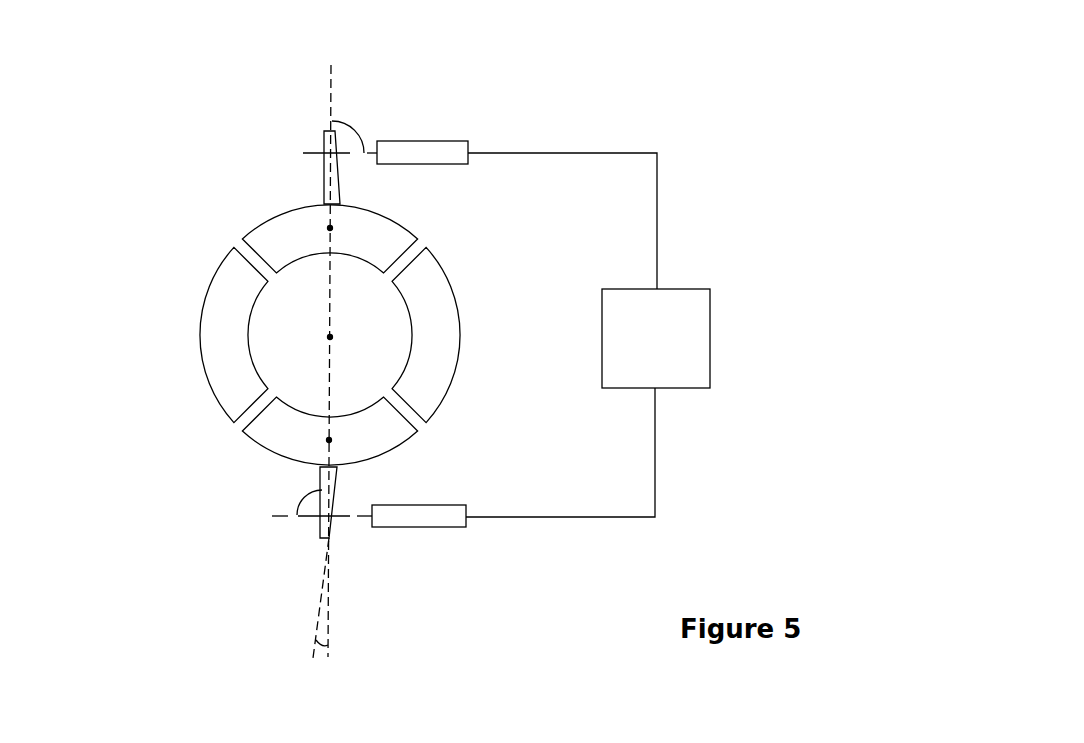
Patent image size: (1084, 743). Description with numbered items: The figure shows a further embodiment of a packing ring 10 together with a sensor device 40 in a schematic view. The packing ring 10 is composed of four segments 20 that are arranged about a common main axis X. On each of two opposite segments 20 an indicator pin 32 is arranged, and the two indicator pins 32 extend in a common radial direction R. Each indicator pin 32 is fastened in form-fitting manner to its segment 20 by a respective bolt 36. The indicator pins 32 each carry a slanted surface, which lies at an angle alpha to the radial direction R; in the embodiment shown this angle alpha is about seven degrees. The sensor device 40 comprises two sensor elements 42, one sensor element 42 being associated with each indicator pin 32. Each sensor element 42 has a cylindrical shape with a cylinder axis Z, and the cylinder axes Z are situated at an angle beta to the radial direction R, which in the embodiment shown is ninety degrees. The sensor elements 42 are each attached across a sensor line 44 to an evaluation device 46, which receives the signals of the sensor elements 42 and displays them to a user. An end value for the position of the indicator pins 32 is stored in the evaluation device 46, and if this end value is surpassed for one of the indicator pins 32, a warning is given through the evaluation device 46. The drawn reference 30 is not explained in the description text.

The packing ring 10 is at (327, 361).
The segment 20 is at (285, 223).
The light beam 30 is at (316, 121).
The indicator pin 32 is at (322, 145).
The bolt 36 is at (330, 228).
The sensor device 40 is at (534, 329).
The sensor element 42 is at (433, 155).
The sensor line 44 is at (540, 153).
The evaluation device 46 is at (680, 307).
The radial direction R is at (330, 298).
The main axis X is at (330, 337).
The cylinder axis Z is at (363, 150).
The angle ß beta is at (342, 137).
The angle α alpha is at (327, 637).